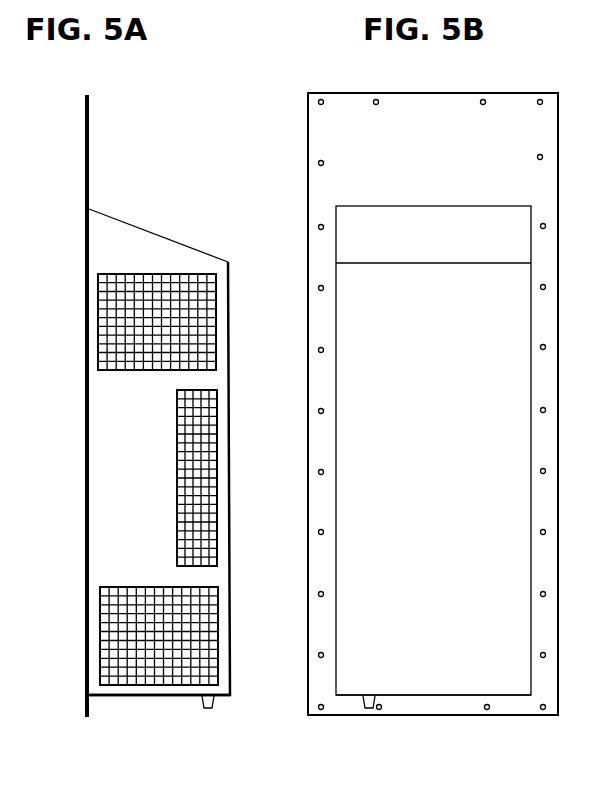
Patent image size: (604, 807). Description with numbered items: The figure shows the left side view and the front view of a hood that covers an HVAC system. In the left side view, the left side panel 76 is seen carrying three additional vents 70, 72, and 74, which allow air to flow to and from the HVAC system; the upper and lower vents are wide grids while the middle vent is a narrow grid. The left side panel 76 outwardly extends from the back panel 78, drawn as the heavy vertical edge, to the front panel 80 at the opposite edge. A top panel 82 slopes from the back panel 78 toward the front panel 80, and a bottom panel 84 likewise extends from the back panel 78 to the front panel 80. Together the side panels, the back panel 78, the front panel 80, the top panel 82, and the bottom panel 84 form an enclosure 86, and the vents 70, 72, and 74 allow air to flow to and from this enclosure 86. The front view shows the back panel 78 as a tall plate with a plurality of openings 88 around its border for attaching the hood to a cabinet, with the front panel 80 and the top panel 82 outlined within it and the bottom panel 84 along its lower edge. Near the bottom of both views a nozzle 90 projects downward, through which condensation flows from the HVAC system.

In FIG. 5A, the vent 70 is at (108, 300).
In FIG. 5A, the vent 72 is at (205, 436).
In FIG. 5A, the vent 74 is at (110, 617).
In FIG. 5A, the left side panel 76 is at (117, 415).
In FIG. 5A, the back panel 78 is at (85, 108).
In FIG. 5B, the back panel 78 is at (559, 119).
In FIG. 5A, the front panel 80 is at (232, 680).
In FIG. 5B, the front panel 80 is at (440, 289).
In FIG. 5A, the top panel 82 is at (148, 226).
In FIG. 5B, the top panel 82 is at (505, 225).
In FIG. 5A, the bottom panel 84 is at (111, 698).
In FIG. 5B, the bottom panel 84 is at (509, 697).
In FIG. 5A, the enclosure 86 is at (100, 468).
In FIG. 5B, the enclosure 86 is at (600, 711).
In FIG. 5B, the openings 88 is at (318, 162).
In FIG. 5A, the nozzle 90 is at (200, 707).
In FIG. 5B, the nozzle 90 is at (350, 700).